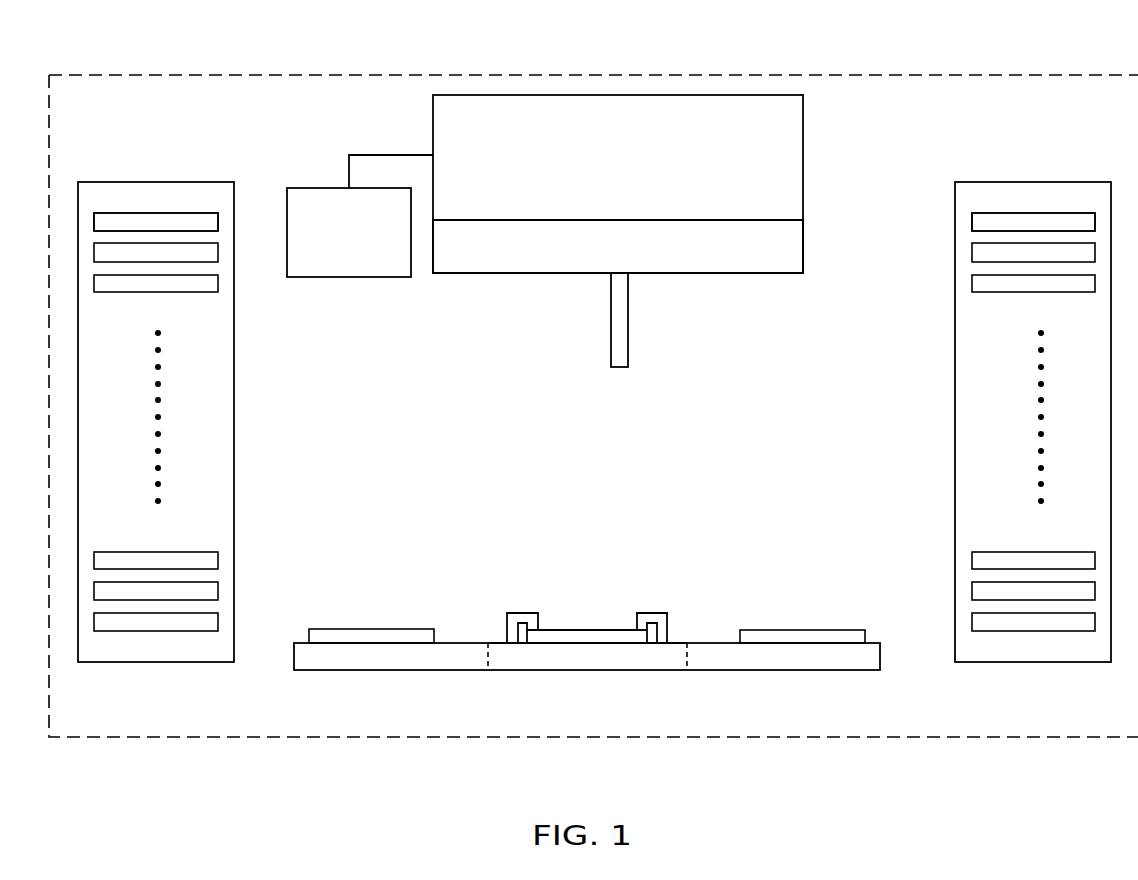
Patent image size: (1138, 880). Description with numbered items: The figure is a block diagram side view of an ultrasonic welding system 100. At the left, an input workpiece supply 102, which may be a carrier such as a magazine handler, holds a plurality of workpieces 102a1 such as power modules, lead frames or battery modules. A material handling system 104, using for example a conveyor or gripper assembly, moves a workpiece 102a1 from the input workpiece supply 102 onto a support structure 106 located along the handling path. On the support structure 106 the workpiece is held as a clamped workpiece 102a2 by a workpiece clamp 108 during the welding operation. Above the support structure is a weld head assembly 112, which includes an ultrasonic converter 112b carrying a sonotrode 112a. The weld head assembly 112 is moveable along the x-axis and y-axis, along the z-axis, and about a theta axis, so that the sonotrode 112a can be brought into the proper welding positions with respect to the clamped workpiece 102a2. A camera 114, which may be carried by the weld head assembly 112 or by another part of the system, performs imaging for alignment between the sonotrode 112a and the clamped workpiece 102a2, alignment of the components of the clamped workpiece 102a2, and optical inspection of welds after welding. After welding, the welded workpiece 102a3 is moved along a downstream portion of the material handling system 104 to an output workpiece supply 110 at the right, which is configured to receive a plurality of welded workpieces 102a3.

The ultrasonic welding system 100 is at (1031, 75).
The input workpiece supply 102 is at (133, 662).
The workpiece 102a1 is at (123, 222).
The clamped workpiece 102a2 is at (596, 638).
The welded workpiece 102a3 is at (1044, 212).
The material handling system 104 is at (294, 656).
The support structure 106 is at (562, 670).
The workpiece clamp 108 is at (655, 613).
The output workpiece supply 110 is at (1040, 662).
The weld head assembly 112 is at (638, 191).
The sonotrode 112a is at (611, 313).
The ultrasonic converter 112b is at (648, 263).
The camera 114 is at (367, 265).